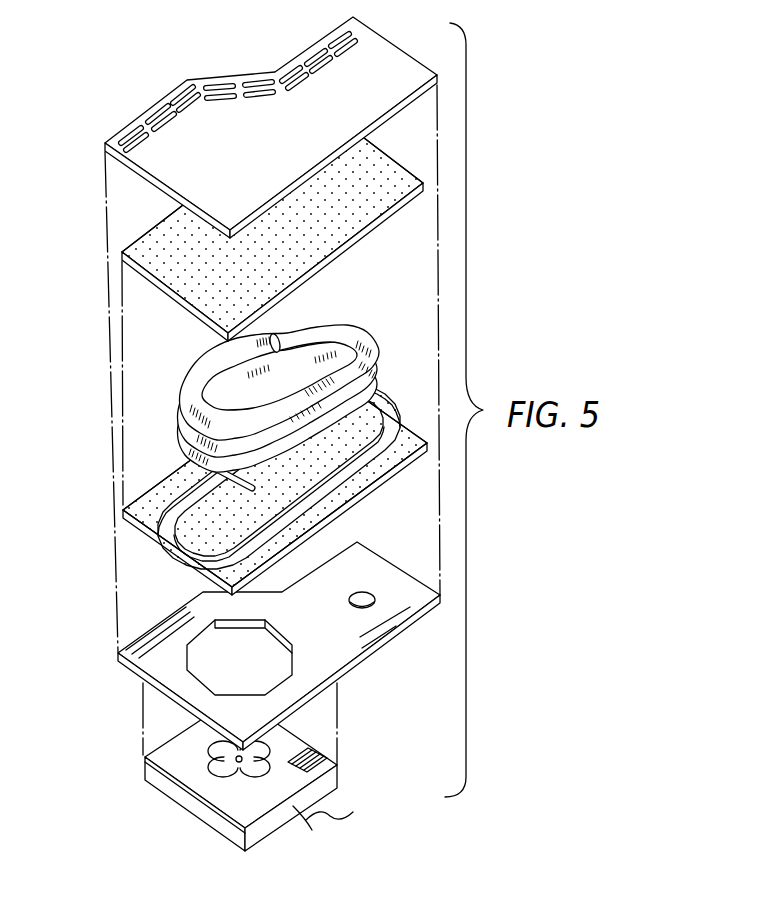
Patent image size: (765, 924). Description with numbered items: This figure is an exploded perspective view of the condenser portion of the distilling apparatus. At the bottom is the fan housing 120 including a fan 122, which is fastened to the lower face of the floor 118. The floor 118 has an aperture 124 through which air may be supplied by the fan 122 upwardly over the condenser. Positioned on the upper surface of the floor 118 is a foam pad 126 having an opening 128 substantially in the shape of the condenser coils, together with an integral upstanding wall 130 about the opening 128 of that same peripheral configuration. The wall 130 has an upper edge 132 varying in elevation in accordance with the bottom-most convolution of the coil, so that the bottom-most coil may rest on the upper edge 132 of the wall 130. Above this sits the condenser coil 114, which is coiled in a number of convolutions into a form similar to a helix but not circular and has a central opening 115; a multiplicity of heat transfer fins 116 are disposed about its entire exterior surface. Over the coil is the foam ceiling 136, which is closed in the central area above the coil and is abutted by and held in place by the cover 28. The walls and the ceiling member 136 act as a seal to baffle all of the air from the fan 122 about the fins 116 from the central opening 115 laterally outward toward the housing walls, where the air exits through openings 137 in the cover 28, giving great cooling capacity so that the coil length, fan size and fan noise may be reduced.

The cover 28 is at (271, 119).
The openings 137 is at (221, 88).
The foam ceiling 136 is at (121, 253).
The condenser coil 114 is at (243, 367).
The central opening 115 is at (226, 398).
The heat transfer fins 116 is at (375, 343).
The upstanding wall 130 is at (242, 480).
The foam pad 126 is at (127, 509).
The upper edge 132 is at (183, 518).
The opening 128 is at (200, 497).
The floor 118 is at (252, 646).
The aperture 124 is at (215, 647).
The fan housing 120 is at (262, 779).
The fan 122 is at (268, 745).